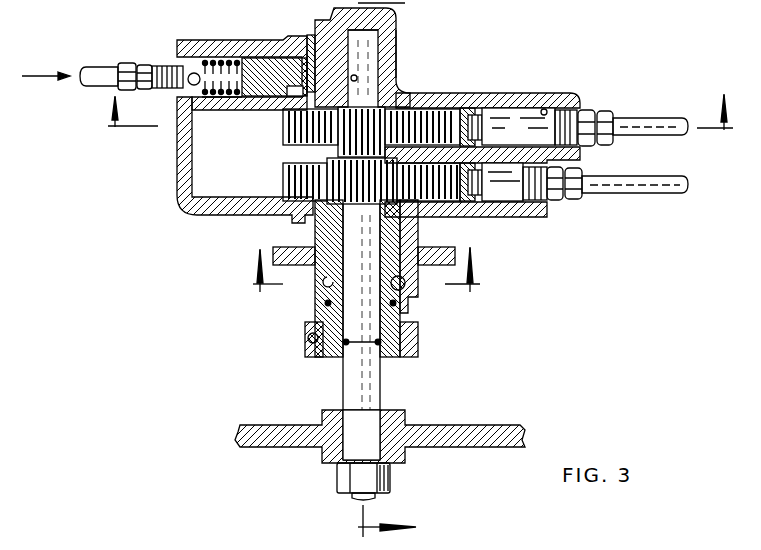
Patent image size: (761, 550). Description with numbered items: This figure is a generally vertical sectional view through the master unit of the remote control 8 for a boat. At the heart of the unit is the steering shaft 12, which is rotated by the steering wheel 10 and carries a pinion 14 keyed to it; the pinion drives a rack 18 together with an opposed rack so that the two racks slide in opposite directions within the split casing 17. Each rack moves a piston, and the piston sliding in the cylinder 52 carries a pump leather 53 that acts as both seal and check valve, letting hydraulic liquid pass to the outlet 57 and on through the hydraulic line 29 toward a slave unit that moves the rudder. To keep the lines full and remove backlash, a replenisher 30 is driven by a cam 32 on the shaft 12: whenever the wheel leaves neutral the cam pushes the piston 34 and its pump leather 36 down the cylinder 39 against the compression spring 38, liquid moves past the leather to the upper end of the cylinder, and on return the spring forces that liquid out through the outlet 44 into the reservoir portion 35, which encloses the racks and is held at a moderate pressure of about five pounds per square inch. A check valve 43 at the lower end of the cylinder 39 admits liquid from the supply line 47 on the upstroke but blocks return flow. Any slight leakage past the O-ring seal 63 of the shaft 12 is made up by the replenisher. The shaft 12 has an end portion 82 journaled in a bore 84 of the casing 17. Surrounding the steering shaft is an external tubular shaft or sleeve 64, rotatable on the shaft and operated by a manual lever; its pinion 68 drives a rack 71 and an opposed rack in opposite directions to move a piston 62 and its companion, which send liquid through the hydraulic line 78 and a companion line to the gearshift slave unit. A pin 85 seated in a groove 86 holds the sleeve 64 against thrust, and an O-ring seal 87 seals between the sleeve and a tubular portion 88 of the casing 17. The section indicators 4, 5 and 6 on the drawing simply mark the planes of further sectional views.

The remote control 8 is at (165, 220).
The steering wheel 10 is at (455, 427).
The shaft 12 is at (383, 393).
The pinion 14 is at (360, 136).
The split housing or casing 17 is at (437, 93).
The rack 18 is at (450, 109).
The hydraulic line 29 is at (650, 119).
The replenisher 30 is at (173, 41).
The cam 32 is at (358, 74).
The piston 34 is at (262, 58).
The reservoir portion 35 is at (248, 174).
The pump leather 36 is at (309, 50).
The compression spring 38 is at (214, 60).
The cylinder 39 is at (256, 98).
The check valve 43 is at (190, 72).
The outlet 44 is at (296, 96).
The supply line 47 is at (100, 66).
The cylinder 52 is at (546, 108).
The pump leather 53 is at (488, 108).
The outlet 57 is at (576, 96).
The piston 62 is at (484, 196).
The O-ring seal 63 is at (348, 347).
The external tubular shaft or sleeve 64 is at (418, 338).
The pinion 68 is at (419, 214).
The rack 71 is at (285, 184).
The hydraulic line 78 is at (657, 195).
The end portion 82 is at (389, 48).
The bore 84 is at (389, 23).
The pin 85 is at (407, 291).
The groove 86 is at (332, 284).
The O-ring seal 87 is at (325, 306).
The tubular portion 88 is at (309, 330).
The section line 4- 4 is at (418, 126).
The section line 5- 5 is at (375, 271).
The section line 6- 6 is at (359, 280).